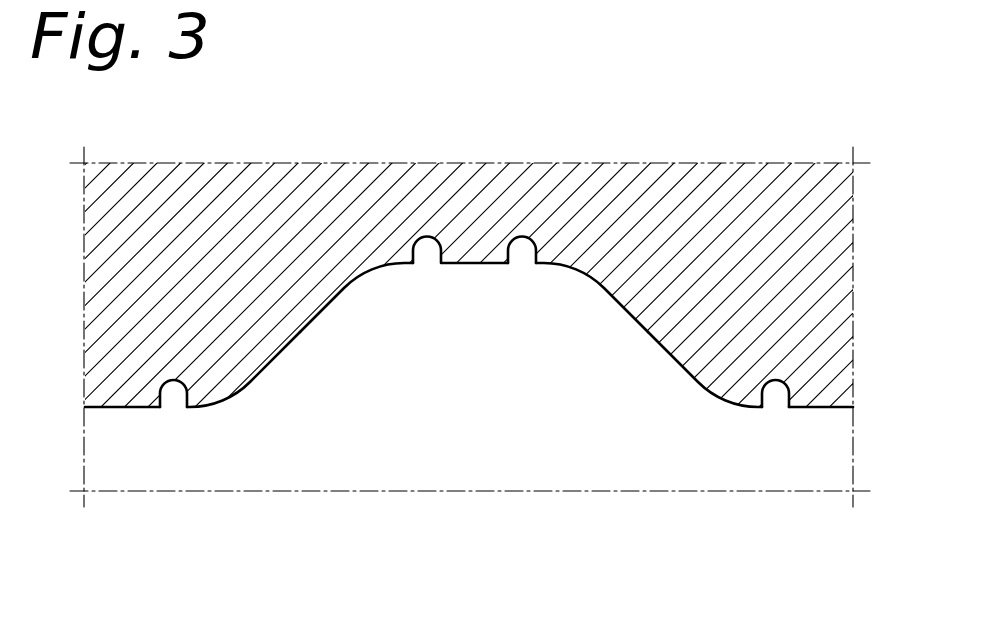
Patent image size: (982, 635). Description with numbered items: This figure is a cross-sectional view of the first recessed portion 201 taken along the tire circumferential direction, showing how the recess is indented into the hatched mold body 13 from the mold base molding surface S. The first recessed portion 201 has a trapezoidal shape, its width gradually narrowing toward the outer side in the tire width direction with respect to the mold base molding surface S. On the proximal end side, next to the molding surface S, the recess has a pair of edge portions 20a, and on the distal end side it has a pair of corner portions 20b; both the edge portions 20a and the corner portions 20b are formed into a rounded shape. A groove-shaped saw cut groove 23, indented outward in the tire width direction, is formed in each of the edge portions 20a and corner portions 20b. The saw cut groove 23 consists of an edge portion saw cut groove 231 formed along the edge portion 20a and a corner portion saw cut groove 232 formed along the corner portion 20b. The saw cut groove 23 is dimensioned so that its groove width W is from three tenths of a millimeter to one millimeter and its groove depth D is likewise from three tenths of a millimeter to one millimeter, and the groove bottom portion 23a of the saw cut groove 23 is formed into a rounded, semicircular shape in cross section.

The inner surface member (hatched body) 13 is at (677, 173).
The saw cut groove 23 is at (472, 435).
The edge portion saw cut groove 231 is at (812, 430).
The corner portion saw cut groove 232 is at (505, 274).
The groove bottom portion 23a is at (518, 264).
The first recessed portion 201 is at (474, 326).
The edge portion 20a is at (242, 393).
The corner portion 20b is at (377, 270).
The mold base molding surface S is at (838, 410).
The groove depth D is at (160, 380).
The groove width W is at (187, 407).